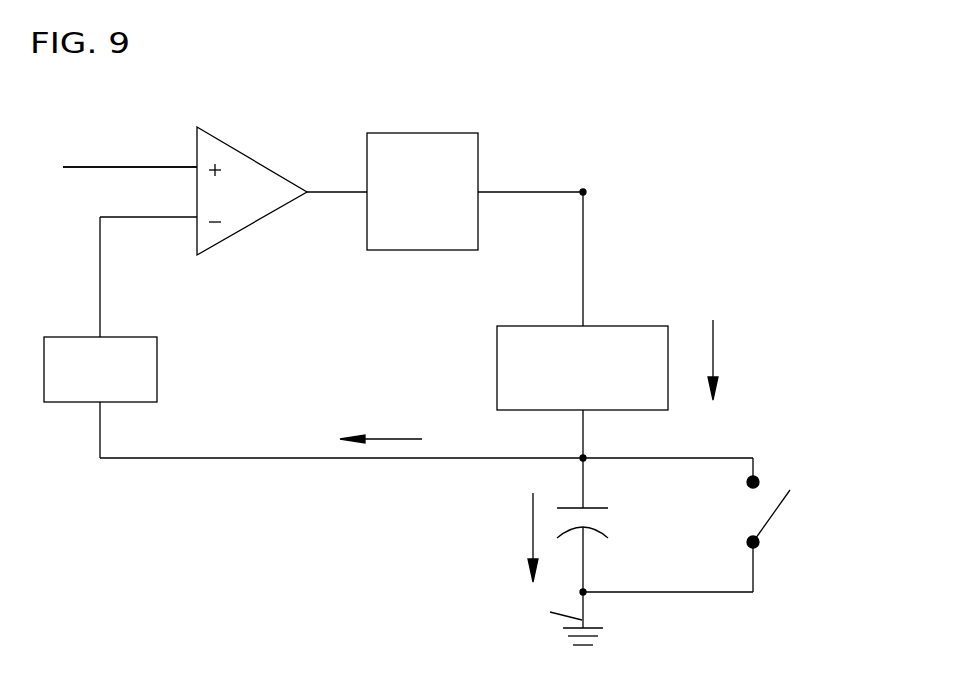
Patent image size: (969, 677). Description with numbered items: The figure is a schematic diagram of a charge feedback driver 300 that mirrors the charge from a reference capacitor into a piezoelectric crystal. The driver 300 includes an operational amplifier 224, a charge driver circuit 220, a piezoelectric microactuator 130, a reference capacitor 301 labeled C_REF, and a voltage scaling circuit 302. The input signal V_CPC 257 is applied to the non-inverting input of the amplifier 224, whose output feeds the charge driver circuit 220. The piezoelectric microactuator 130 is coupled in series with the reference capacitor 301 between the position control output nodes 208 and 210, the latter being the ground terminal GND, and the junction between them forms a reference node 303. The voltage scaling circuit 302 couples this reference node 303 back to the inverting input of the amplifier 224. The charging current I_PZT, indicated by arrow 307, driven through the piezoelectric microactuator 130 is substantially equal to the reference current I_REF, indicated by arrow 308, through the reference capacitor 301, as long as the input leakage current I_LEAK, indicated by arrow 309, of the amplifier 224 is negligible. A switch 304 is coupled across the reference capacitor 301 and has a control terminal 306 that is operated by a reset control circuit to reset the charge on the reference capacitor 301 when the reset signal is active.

The charge feedback driver 300 is at (200, 494).
The V_CPC input signal 257 is at (110, 167).
The operational amplifier 224 is at (252, 163).
The charge driver circuit 220 is at (422, 132).
The position control output node 208 is at (585, 190).
The piezoelectric microactuator 130 is at (642, 323).
The charging current I_PZT arrow 307 is at (713, 320).
The voltage scaling circuit 302 is at (159, 360).
The input leakage current I_LEAK arrow 309 is at (405, 440).
The reference node 303 is at (585, 458).
The reference capacitor 301 is at (595, 507).
The reference current I_REF arrow 308 is at (530, 507).
The position control output node 210 is at (585, 592).
The control terminal 306 is at (766, 522).
The switch 304 is at (762, 528).